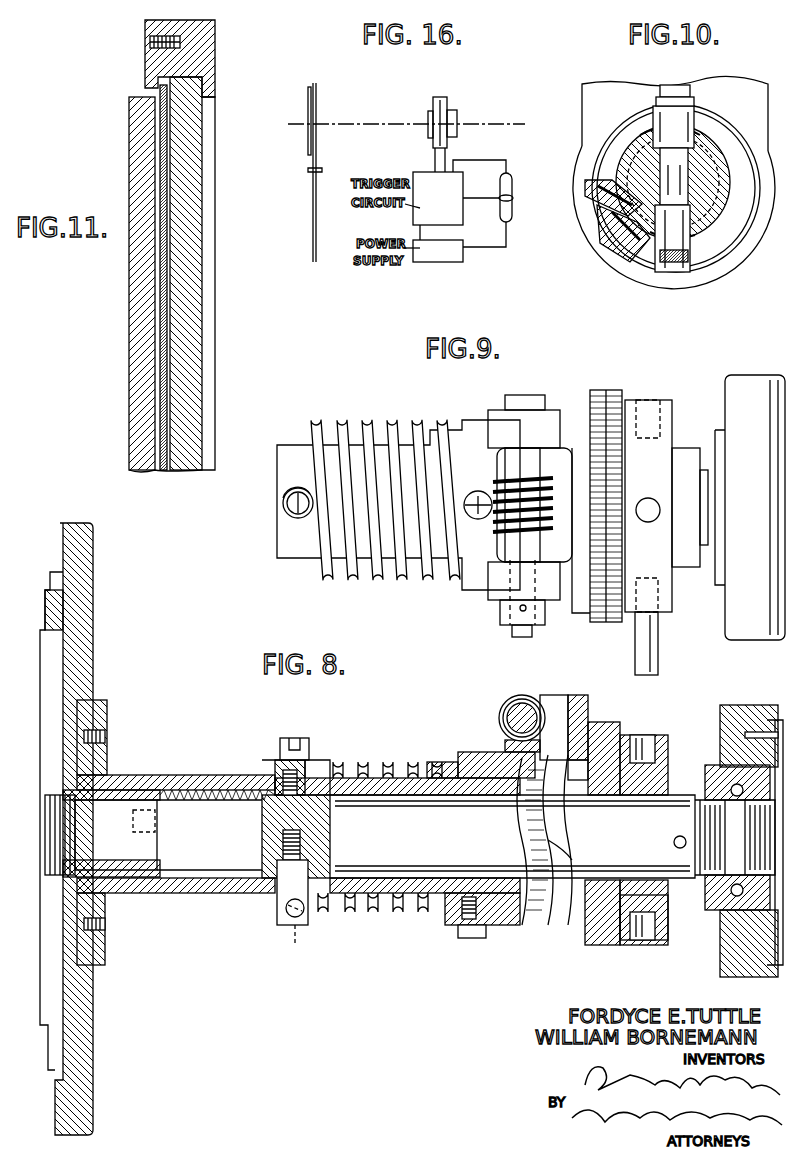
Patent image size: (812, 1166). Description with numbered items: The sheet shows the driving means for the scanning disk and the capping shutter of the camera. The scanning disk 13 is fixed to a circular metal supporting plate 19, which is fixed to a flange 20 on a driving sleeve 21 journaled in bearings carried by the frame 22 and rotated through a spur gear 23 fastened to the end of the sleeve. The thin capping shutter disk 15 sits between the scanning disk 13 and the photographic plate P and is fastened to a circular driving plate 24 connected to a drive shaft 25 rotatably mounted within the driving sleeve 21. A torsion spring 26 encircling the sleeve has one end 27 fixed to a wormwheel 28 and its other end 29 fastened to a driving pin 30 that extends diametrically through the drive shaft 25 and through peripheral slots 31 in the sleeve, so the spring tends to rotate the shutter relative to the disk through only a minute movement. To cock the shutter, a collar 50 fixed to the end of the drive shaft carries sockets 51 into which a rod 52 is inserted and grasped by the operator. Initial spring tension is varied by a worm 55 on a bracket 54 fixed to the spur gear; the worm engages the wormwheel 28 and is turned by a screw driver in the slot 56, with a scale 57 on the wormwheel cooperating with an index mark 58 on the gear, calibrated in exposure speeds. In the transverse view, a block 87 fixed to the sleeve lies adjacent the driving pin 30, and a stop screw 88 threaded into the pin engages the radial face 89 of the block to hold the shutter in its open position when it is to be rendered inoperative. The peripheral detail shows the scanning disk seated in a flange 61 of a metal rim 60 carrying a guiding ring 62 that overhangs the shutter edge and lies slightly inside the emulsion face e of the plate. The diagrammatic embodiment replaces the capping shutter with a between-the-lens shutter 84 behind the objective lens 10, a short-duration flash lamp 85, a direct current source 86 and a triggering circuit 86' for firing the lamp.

In FIG. 16, the objective lens 10 is at (457, 116).
In FIG. 8, the objective lens 10 is at (291, 721).
In FIG. 11, the scanning disk 13 is at (188, 472).
In FIG. 16, the scanning disk 13 is at (311, 244).
In FIG. 11, the capping shutter disk 15 is at (163, 470).
In FIG. 8, the circular metal supporting plate 19 is at (82, 1012).
In FIG. 8, the flange 20 is at (100, 953).
In FIG. 10, the driving sleeve 21 is at (733, 182).
In FIG. 9, the driving sleeve 21 is at (298, 560).
In FIG. 8, the driving sleeve 21 is at (228, 775).
In FIG. 9, the frame 22 is at (737, 645).
In FIG. 8, the frame 22 is at (718, 975).
In FIG. 9, the spur gear 23 is at (608, 392).
In FIG. 8, the spur gear 23 is at (605, 735).
In FIG. 8, the circular driving plate 24 is at (63, 978).
In FIG. 10, the drive shaft 25 is at (705, 172).
In FIG. 8, the drive shaft 25 is at (410, 836).
In FIG. 10, the torsion spring 26 is at (727, 246).
In FIG. 9, the torsion spring 26 is at (330, 586).
In FIG. 8, the torsion spring 26 is at (400, 920).
In FIG. 9, the end of torsion spring 27 is at (478, 491).
In FIG. 8, the end of torsion spring 27 is at (455, 925).
In FIG. 8, the wormwheel 28 is at (505, 750).
In FIG. 10, the other end of torsion spring 29 is at (655, 100).
In FIG. 9, the other end of torsion spring 29 is at (296, 518).
In FIG. 8, the other end of torsion spring 29 is at (316, 758).
In FIG. 10, the driving pin 30 is at (692, 122).
In FIG. 9, the driving pin 30 is at (283, 503).
In FIG. 8, the driving pin 30 is at (283, 762).
In FIG. 10, the peripheral slots 31 is at (640, 136).
In FIG. 9, the collar 50 is at (672, 406).
In FIG. 8, the collar 50 is at (672, 745).
In FIG. 9, the sockets 51 is at (655, 400).
In FIG. 8, the sockets 51 is at (645, 735).
In FIG. 9, the rod 52 is at (656, 652).
In FIG. 9, the bracket 54 is at (567, 410).
In FIG. 8, the bracket 54 is at (572, 700).
In FIG. 9, the worm 55 is at (496, 533).
In FIG. 8, the worm 55 is at (499, 712).
In FIG. 9, the slot 56 is at (515, 640).
In FIG. 8, the scale 57 is at (540, 822).
In FIG. 8, the index mark 58 is at (560, 855).
In FIG. 11, the metal rim 60 is at (198, 55).
In FIG. 11, the flange 61 is at (210, 86).
In FIG. 11, the guiding ring 62 is at (146, 68).
In FIG. 16, the between-the-lens type shutter 84 is at (440, 98).
In FIG. 16, the flash lamp 85 is at (512, 176).
In FIG. 16, the source of direct current 86 is at (438, 265).
In FIG. 16, the triggering circuit 86' is at (438, 198).
In FIG. 10, the block 87 is at (605, 222).
In FIG. 10, the stop screw 88 is at (650, 264).
In FIG. 10, the radial face 89 is at (640, 255).
In FIG. 11, the photographic plate P is at (129, 370).
In FIG. 16, the photographic plate P is at (308, 92).
In FIG. 11, the emulsion face e is at (152, 470).